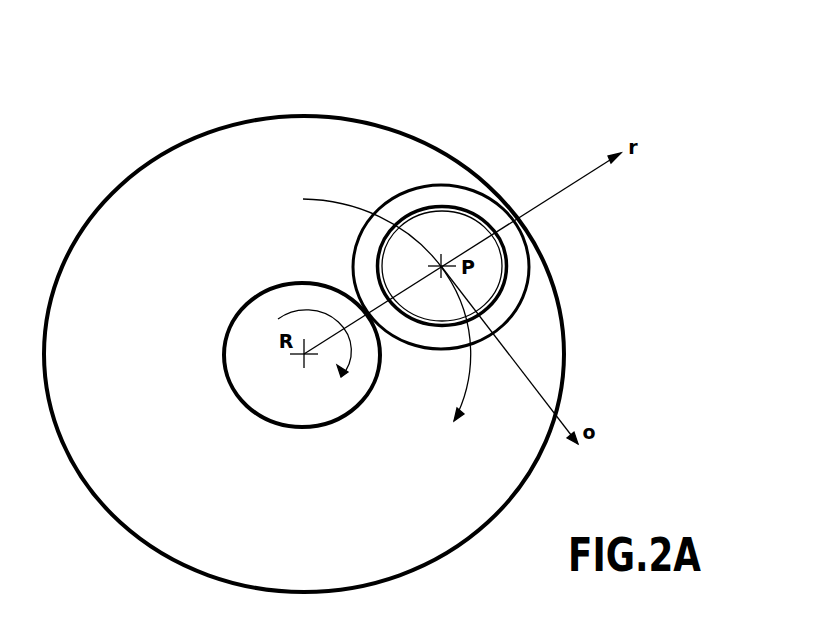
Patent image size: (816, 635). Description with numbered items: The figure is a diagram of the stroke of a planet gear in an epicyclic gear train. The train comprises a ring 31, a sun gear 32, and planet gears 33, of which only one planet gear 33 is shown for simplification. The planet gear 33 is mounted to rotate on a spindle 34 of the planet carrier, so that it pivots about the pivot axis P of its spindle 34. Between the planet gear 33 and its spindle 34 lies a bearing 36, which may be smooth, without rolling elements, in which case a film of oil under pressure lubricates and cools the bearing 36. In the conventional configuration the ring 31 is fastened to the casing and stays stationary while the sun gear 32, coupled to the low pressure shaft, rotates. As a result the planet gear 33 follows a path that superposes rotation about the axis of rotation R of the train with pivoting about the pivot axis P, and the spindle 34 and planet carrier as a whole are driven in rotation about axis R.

The ring 31 is at (392, 127).
The sun gear 32 is at (287, 397).
The planet gear 33 is at (472, 202).
The spindle 34 is at (422, 222).
The bearing 36 is at (507, 262).